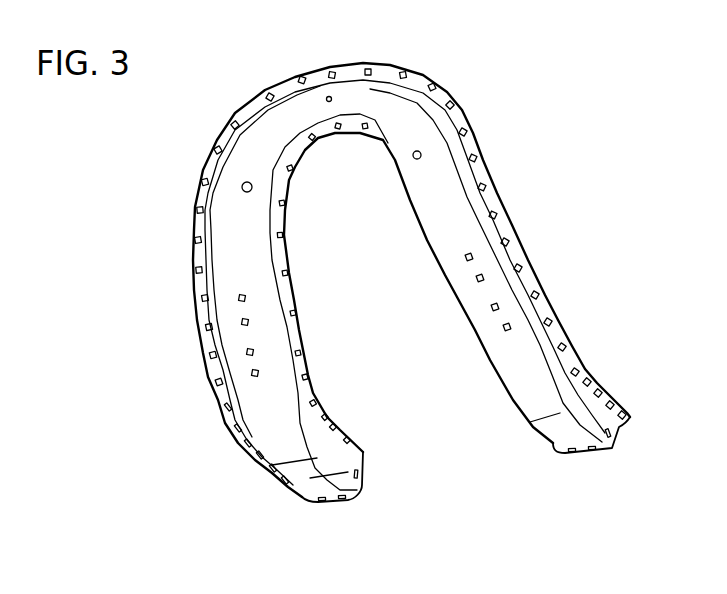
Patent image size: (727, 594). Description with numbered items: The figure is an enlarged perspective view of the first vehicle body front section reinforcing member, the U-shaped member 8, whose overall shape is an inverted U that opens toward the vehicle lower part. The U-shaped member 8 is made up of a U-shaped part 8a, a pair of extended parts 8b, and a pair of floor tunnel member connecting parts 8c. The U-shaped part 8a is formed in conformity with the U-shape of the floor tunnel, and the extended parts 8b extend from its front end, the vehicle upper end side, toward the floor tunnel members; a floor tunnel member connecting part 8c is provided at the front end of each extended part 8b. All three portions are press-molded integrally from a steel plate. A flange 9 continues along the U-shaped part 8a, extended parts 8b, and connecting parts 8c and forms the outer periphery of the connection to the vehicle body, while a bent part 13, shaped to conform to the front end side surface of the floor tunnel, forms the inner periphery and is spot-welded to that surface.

The U-shaped member 8 is at (502, 147).
The U-shaped part 8a is at (300, 110).
The extended parts 8b is at (238, 314).
The floor tunnel member connecting parts 8c is at (312, 478).
The flange 9 is at (193, 227).
The bent part 13 is at (287, 292).